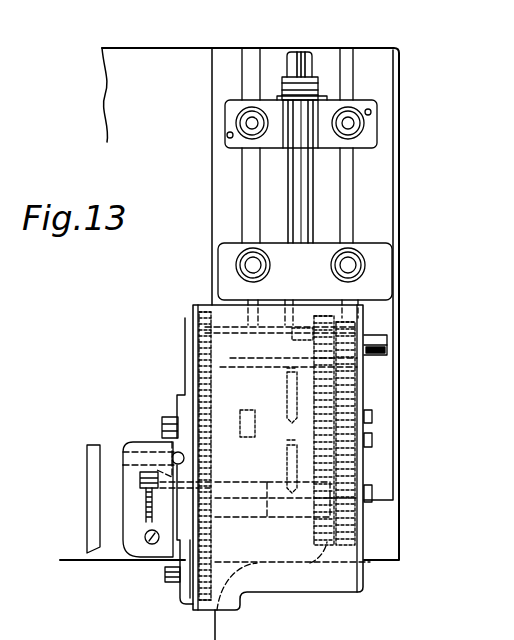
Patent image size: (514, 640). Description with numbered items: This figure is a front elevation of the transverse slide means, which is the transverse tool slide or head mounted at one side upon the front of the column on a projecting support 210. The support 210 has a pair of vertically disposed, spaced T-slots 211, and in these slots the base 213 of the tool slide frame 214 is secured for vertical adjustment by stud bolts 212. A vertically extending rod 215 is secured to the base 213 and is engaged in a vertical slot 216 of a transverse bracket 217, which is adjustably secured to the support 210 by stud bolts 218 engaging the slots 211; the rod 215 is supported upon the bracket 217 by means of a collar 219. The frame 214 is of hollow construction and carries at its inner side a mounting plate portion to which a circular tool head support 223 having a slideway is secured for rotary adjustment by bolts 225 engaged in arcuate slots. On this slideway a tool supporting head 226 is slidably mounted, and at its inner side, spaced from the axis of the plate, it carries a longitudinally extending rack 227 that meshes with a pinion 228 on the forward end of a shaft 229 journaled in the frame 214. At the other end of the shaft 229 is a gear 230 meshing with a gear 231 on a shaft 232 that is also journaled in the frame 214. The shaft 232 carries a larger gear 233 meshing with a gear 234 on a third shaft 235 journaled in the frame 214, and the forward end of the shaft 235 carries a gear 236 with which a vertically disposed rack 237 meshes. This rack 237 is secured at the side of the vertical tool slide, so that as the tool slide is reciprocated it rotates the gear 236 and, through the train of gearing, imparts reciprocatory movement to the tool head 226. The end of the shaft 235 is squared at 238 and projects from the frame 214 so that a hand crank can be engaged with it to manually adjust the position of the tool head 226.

The projecting support 210 is at (282, 56).
The T-slots 211 is at (243, 57).
The stud bolts 212 is at (237, 262).
The base 213 is at (228, 286).
The tool slide frame 214 is at (200, 305).
The vertically extending rod 215 is at (290, 207).
The vertical slot 216 is at (285, 133).
The transverse bracket 217 is at (230, 108).
The stud bolts 218 is at (245, 124).
The collar 219 is at (311, 86).
The circular tool head support 223 is at (180, 415).
The bolts 225 is at (168, 572).
The tool supporting head 226 is at (133, 532).
The rack 227 is at (152, 475).
The pinion 228 is at (147, 505).
The shaft 229 is at (250, 505).
The gear 230 is at (292, 576).
The gear 231 is at (363, 460).
The shaft 232 is at (284, 386).
The larger gear 233 is at (368, 375).
The gear 234 is at (337, 318).
The shaft 235 is at (240, 352).
The gear 236 is at (198, 348).
The vertically disposed rack 237 is at (198, 378).
The squared end 238 is at (388, 340).